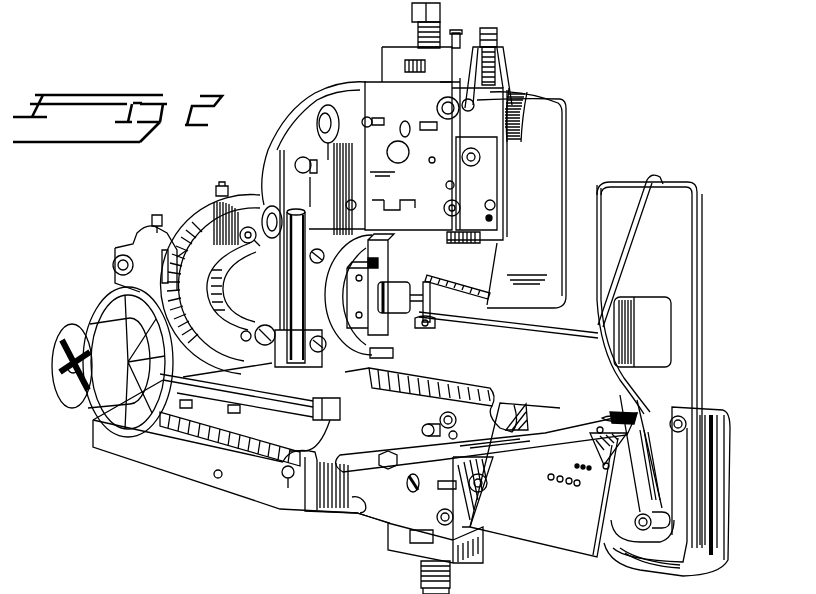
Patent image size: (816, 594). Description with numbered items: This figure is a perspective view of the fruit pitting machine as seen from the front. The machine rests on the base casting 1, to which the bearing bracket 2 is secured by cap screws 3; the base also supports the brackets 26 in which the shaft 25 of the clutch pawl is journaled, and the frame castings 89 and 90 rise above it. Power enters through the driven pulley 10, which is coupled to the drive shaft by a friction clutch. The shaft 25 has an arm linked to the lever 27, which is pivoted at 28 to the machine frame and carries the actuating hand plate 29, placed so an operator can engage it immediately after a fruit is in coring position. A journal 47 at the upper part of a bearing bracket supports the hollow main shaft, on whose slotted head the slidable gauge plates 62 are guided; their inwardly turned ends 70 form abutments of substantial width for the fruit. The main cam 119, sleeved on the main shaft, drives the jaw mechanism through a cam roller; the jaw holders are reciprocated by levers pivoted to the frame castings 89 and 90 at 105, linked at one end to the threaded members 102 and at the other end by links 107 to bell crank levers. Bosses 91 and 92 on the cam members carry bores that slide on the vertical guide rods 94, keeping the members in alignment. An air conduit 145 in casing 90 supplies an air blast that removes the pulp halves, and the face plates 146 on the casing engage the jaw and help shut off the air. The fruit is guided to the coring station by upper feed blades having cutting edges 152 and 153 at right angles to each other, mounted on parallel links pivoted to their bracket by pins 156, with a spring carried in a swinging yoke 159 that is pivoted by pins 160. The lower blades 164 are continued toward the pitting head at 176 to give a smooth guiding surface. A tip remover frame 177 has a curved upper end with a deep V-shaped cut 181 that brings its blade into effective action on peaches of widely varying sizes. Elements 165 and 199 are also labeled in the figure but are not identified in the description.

The base casting 1 is at (173, 452).
The bearing bracket 2 is at (253, 422).
The cap screws 3 is at (197, 420).
The pulley 10 is at (96, 412).
The shaft 25 is at (210, 375).
The brackets 26 is at (342, 410).
The lever 27 is at (540, 430).
The pivot 28 is at (389, 468).
The actuating hand plate 29 is at (641, 407).
The journal 47 is at (137, 240).
The gauge plates 62 is at (420, 324).
The inwardly turned ends 70 is at (415, 292).
The frame casting 89 is at (363, 508).
The frame casting 90 is at (372, 97).
The boss 91 is at (298, 208).
The boss 92 is at (244, 336).
The vertical guide rods 94 is at (386, 262).
The member 102 is at (418, 34).
The pivot 105 is at (322, 104).
The links 107 is at (286, 128).
The main cam 119 is at (197, 214).
The conduit 145 is at (497, 181).
The face plate 146 is at (453, 272).
The cutting edge 152 is at (547, 160).
The cutting edge 153 is at (525, 326).
The pins 156 is at (520, 86).
The swinging yoke 159 is at (508, 64).
The pins 160 is at (550, 104).
The lower blades 164 is at (678, 243).
The screw 165 is at (497, 33).
The continuation of lower blades 176 is at (433, 366).
The frame 177 is at (600, 264).
The V-shaped cut 181 is at (598, 335).
The pin 199 is at (456, 33).